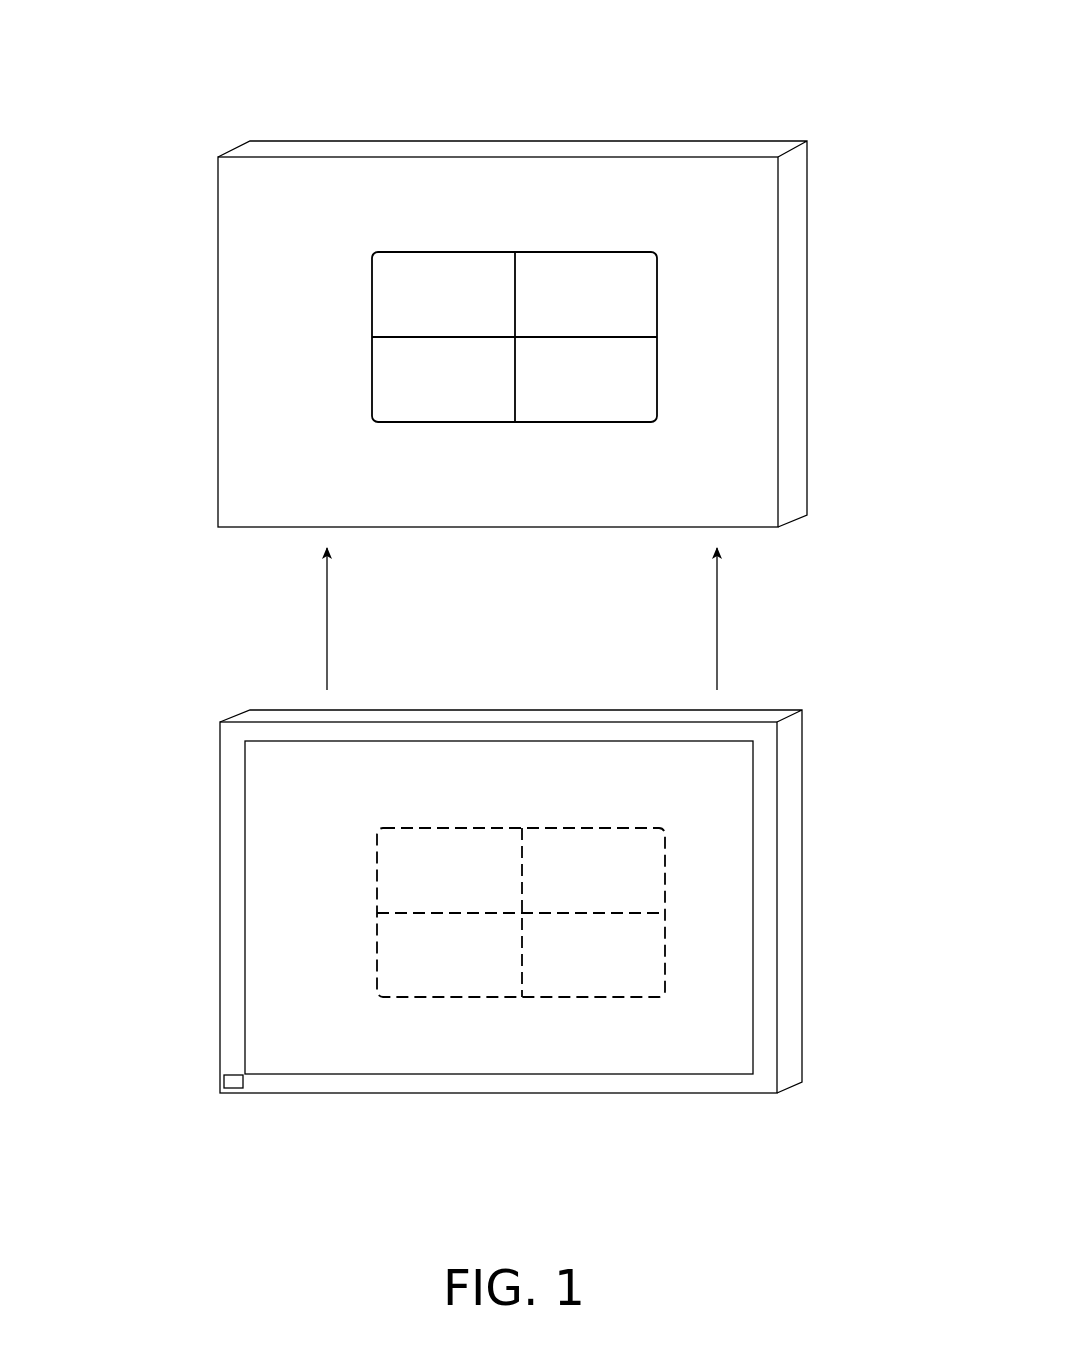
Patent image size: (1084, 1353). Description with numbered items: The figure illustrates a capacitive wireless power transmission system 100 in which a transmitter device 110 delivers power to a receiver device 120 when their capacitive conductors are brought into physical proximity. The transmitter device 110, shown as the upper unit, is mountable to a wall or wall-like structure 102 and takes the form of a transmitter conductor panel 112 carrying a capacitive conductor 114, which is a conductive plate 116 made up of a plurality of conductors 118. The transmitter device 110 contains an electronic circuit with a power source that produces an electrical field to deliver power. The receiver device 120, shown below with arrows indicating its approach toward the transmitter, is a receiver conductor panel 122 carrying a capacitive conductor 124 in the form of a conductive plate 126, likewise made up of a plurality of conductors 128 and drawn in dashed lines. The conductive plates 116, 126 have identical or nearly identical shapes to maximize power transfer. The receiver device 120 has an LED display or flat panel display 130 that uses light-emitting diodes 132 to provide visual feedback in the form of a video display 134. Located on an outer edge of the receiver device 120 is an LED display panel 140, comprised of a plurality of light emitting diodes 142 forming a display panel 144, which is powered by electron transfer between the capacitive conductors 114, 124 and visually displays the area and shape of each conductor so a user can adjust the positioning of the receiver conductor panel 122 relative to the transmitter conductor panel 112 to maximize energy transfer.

The capacitive wireless power transmission system 100 is at (778, 49).
The wall or wall-like structure 102 is at (192, 426).
The transmitter device 110 is at (383, 94).
The transmitter conductor panel 112 is at (573, 424).
The capacitive conductor 114 is at (447, 373).
The conductive plate 116 is at (657, 372).
The plurality of conductors 118 is at (600, 277).
The receiver device 120 is at (208, 909).
The receiver conductor panel 122 is at (600, 997).
The capacitive conductor 124 is at (438, 968).
The conductive plate 126 is at (665, 893).
The plurality of conductors 128 is at (596, 850).
The LED display or flat panel display 130 is at (332, 1031).
The light-emitting diodes 132 is at (734, 831).
The video display 134 is at (755, 1055).
The LED display panel 140 is at (208, 1083).
The light emitting diodes 142 is at (233, 1092).
The display panel 144 is at (264, 1125).